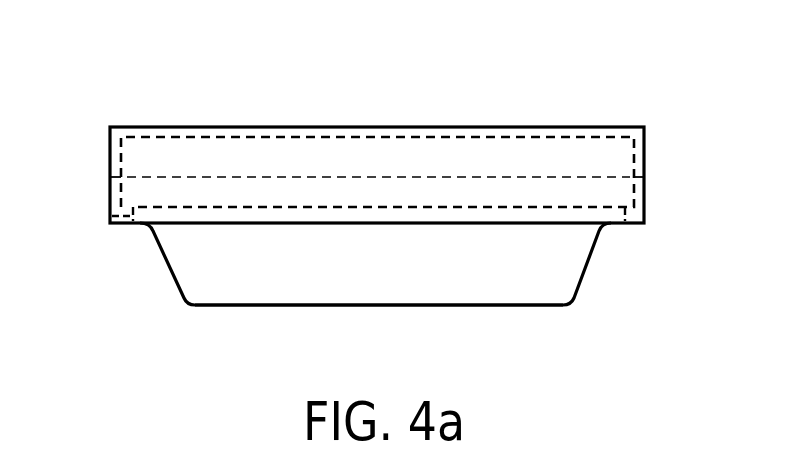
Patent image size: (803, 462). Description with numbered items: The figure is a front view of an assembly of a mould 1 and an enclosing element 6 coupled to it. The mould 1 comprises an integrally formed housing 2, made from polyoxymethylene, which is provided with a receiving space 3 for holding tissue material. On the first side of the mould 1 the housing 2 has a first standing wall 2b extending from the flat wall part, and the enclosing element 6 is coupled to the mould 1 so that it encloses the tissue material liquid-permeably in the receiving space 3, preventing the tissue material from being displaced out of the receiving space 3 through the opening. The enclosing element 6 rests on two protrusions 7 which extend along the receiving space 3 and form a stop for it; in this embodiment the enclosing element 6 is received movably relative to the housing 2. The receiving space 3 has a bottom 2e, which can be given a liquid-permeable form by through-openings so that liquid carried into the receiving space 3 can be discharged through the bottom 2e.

The mould 1 is at (87, 81).
The housing 2 is at (587, 265).
The first standing wall 2b is at (617, 155).
The bottom 2e is at (378, 307).
The receiving space 3 is at (385, 274).
The enclosing element 6 is at (386, 155).
The protrusions 7 is at (110, 215).